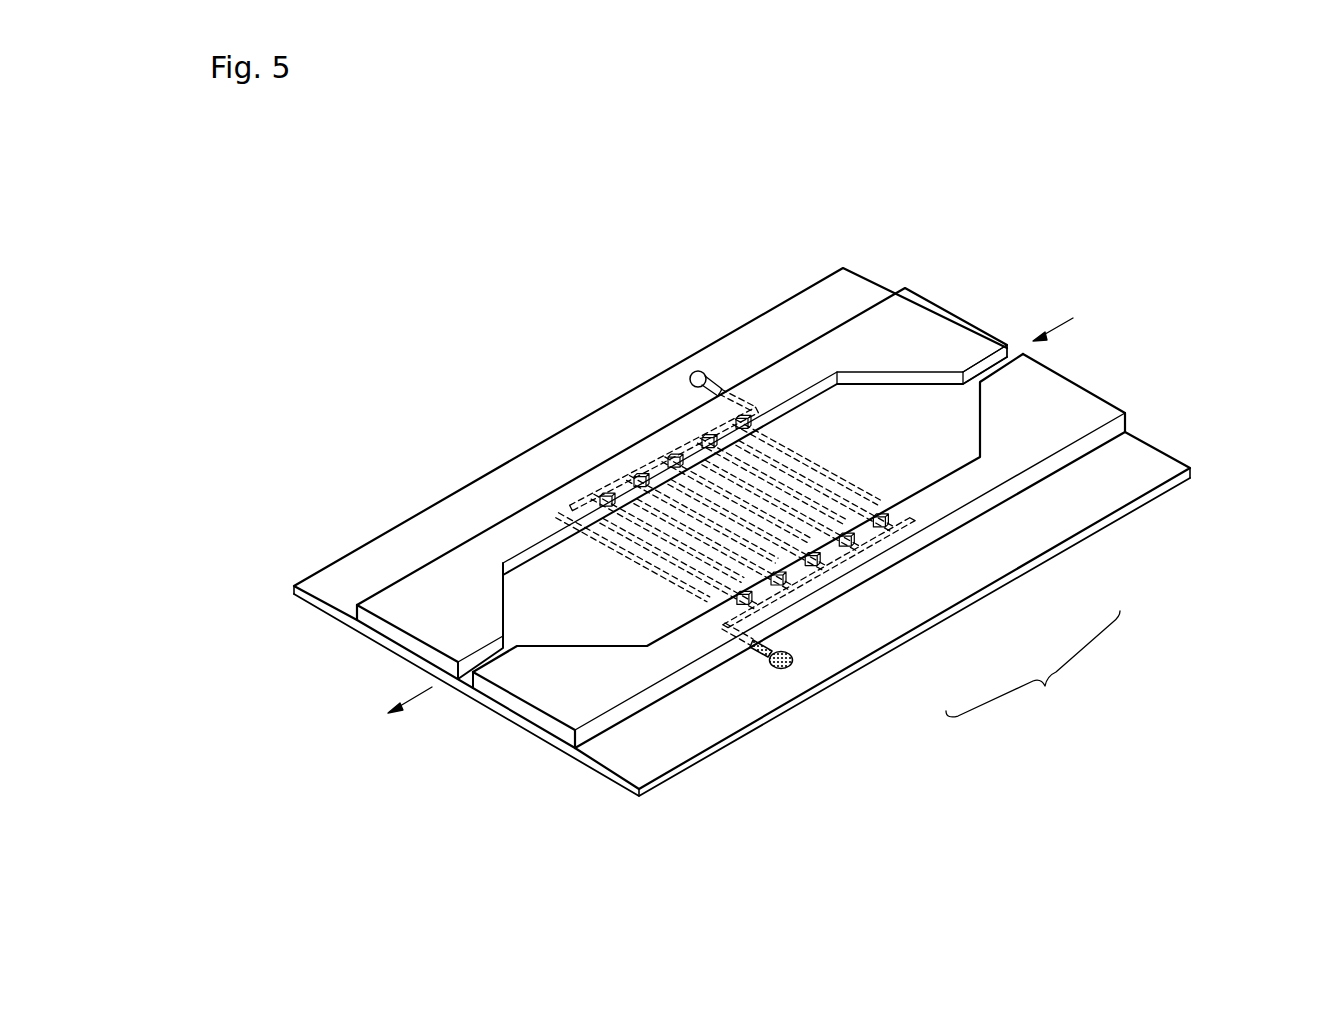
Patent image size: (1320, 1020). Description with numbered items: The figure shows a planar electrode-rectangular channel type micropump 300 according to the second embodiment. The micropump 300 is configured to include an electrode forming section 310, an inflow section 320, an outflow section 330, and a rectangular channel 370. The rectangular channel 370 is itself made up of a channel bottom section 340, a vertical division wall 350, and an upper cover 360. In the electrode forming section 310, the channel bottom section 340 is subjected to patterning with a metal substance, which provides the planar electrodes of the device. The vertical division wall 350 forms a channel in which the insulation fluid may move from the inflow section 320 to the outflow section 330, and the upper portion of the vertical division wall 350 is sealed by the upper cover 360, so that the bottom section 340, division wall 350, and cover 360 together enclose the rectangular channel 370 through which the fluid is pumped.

The planar electrode-rectangular channel type micropump 300 is at (943, 256).
The electrode forming section 310 is at (637, 470).
The inflow section 320 is at (993, 360).
The outflow section 330 is at (465, 680).
The channel bottom section 340 is at (853, 633).
The vertical division wall 350 is at (905, 548).
The upper cover 360 is at (968, 483).
The rectangular channel 370 is at (1033, 665).